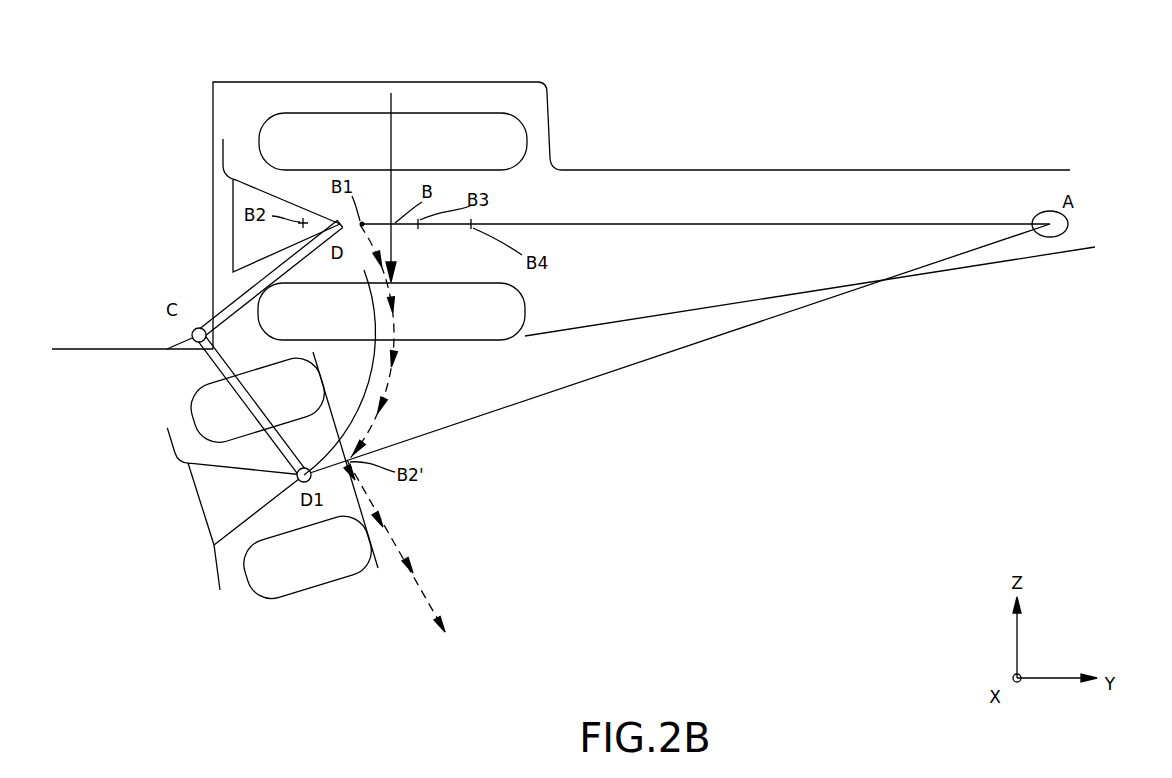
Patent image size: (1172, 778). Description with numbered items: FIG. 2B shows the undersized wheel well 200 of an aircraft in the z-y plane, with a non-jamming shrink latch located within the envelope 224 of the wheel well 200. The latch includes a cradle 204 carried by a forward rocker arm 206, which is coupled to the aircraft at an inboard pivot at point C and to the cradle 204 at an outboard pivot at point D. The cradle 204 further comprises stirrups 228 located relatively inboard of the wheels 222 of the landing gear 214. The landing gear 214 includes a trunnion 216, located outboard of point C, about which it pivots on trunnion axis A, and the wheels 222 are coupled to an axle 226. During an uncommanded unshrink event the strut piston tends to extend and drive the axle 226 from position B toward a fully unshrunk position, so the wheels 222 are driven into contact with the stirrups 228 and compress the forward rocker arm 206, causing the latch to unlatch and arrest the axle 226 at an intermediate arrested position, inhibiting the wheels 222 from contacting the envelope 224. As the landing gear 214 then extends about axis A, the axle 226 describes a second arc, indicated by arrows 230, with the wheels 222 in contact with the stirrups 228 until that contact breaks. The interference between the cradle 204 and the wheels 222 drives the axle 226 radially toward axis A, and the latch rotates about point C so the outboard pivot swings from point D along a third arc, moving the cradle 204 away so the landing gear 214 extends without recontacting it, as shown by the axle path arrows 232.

The wheel well 200 is at (1008, 80).
The cradle 204 is at (233, 210).
The forward rocker arm 206 is at (250, 293).
The landing gear 214 is at (825, 223).
The trunnion 216 is at (1068, 226).
The wheels 222 is at (356, 359).
The envelope 224 is at (713, 170).
The axle 226 is at (393, 145).
The stirrups 228 is at (222, 148).
The arrows 230 is at (397, 358).
The axle path arrows 232 is at (420, 572).